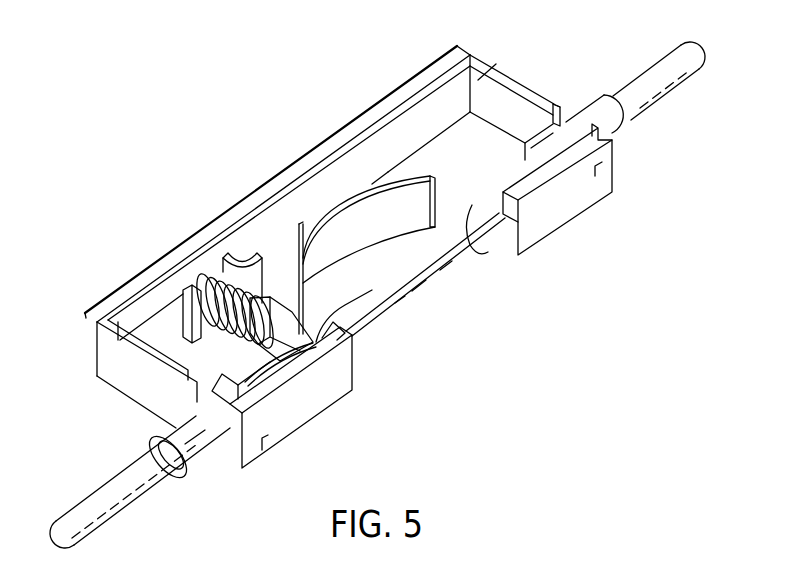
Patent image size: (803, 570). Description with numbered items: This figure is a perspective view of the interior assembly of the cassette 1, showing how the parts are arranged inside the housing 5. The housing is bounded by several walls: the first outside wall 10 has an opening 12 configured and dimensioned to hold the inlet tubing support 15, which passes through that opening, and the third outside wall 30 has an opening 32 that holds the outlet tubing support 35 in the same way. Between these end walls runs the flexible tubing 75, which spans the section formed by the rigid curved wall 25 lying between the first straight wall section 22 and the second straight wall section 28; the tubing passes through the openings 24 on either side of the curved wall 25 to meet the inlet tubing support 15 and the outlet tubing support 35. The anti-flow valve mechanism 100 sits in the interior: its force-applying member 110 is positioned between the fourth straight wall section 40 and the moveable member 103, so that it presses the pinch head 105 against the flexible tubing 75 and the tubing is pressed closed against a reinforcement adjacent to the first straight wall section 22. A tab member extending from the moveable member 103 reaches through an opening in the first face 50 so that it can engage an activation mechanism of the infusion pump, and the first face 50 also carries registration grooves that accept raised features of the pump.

The cassette 1 is at (495, 47).
The housing 5 is at (266, 190).
The first outside wall 10 is at (147, 383).
The opening 12 is at (198, 413).
The inlet tubing support 15 is at (163, 428).
The first straight wall section 22 is at (566, 212).
The openings 24 is at (348, 334).
The rigid curved wall 25 is at (378, 231).
The second straight wall section 28 is at (309, 407).
The third outside wall 30 is at (513, 116).
The opening 32 is at (562, 110).
The outlet tubing support 35 is at (622, 132).
The fourth straight wall section 40 is at (292, 231).
The first face 50 is at (478, 171).
The flexible tubing 75 is at (415, 282).
The anti-flow valve mechanism 100 is at (197, 244).
The moveable member 103 is at (275, 296).
The pinch head 105 is at (314, 347).
The force-applying member 110 is at (193, 283).